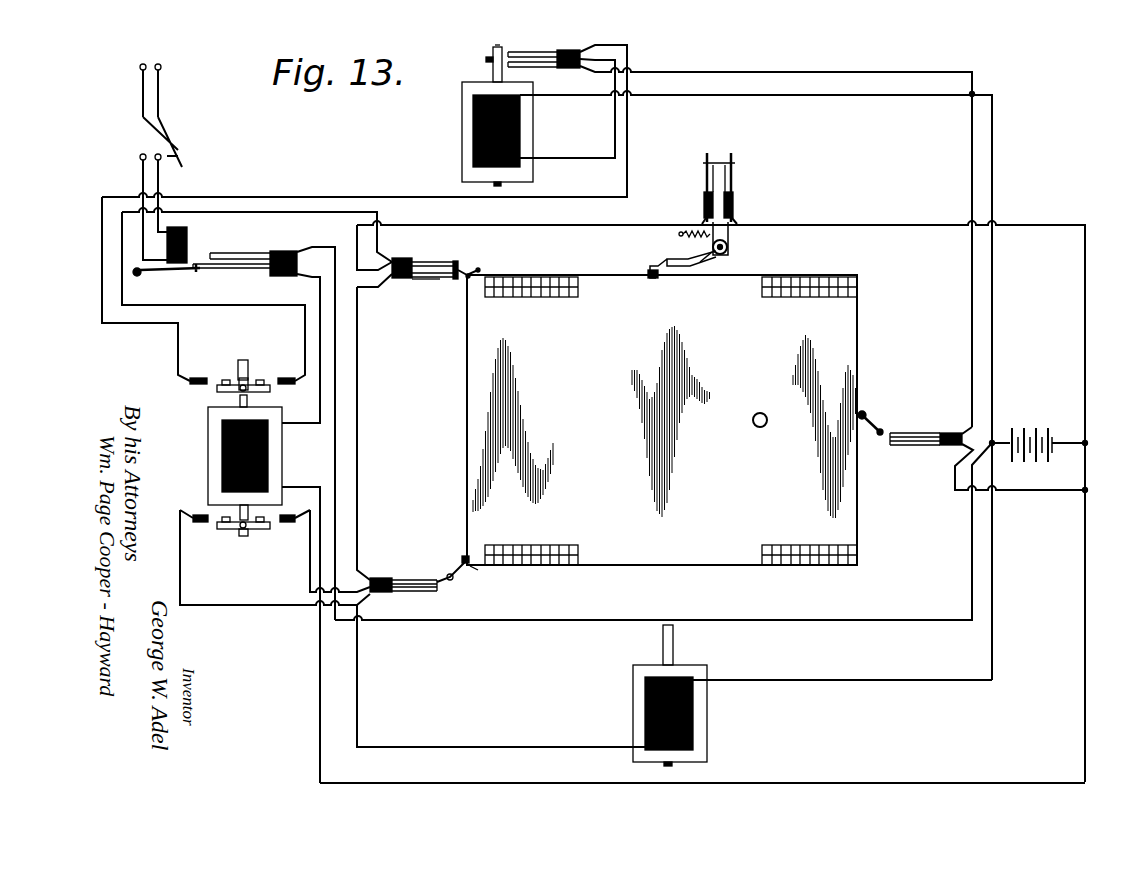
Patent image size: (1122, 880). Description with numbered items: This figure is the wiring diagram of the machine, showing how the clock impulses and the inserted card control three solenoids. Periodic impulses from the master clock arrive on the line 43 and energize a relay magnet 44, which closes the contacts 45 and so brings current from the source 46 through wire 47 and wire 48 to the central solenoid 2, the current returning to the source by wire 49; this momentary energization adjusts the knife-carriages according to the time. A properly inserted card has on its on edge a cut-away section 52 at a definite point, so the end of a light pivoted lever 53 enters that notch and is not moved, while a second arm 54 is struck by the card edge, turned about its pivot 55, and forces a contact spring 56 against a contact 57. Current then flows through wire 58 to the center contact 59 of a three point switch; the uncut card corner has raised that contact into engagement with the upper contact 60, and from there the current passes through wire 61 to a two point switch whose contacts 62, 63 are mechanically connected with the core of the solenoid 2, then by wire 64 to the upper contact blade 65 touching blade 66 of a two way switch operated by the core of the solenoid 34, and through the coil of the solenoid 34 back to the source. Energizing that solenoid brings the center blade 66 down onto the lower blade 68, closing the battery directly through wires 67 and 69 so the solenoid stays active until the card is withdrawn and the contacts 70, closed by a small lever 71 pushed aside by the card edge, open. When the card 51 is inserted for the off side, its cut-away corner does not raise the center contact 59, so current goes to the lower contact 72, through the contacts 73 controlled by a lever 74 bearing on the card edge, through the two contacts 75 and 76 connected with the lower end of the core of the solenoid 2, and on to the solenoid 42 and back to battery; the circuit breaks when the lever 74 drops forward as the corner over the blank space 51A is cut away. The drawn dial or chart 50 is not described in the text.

The solenoid 2 is at (270, 453).
The solenoid 34 is at (472, 119).
The solenoid 42 is at (695, 703).
The line 43 is at (150, 95).
The relay magnet 44 is at (190, 237).
The contacts 45 is at (266, 236).
The source 46 is at (1039, 447).
The wire 47 is at (605, 618).
The wire 48 is at (321, 391).
The wire 49 is at (833, 781).
The chart dial 50 is at (850, 336).
The card 51 is at (480, 277).
The blank space 51A is at (478, 567).
The cut-away section 52 is at (655, 281).
The pivoted lever 53 is at (708, 264).
The second arm 54 is at (653, 263).
The pivot 55 is at (729, 247).
The contact spring 56 is at (703, 170).
The contact 57 is at (735, 171).
The wire 58 is at (856, 226).
The center contact 59 is at (462, 270).
The upper contact 60 is at (437, 265).
The wire 61 is at (120, 258).
The contact 62 is at (260, 377).
The contact 63 is at (205, 377).
The wire 64 is at (268, 198).
The upper contact blade 65 is at (526, 56).
The contact blade 66 is at (490, 57).
The wire 67 is at (971, 290).
The lower blade 68 is at (530, 68).
The wire 69 is at (993, 345).
The contacts 70 is at (925, 429).
The small lever 71 is at (872, 422).
The lower contact 72 is at (440, 278).
The contacts 73 is at (396, 592).
The lever 74 is at (460, 559).
The contact 75 is at (279, 533).
The contact 76 is at (200, 508).